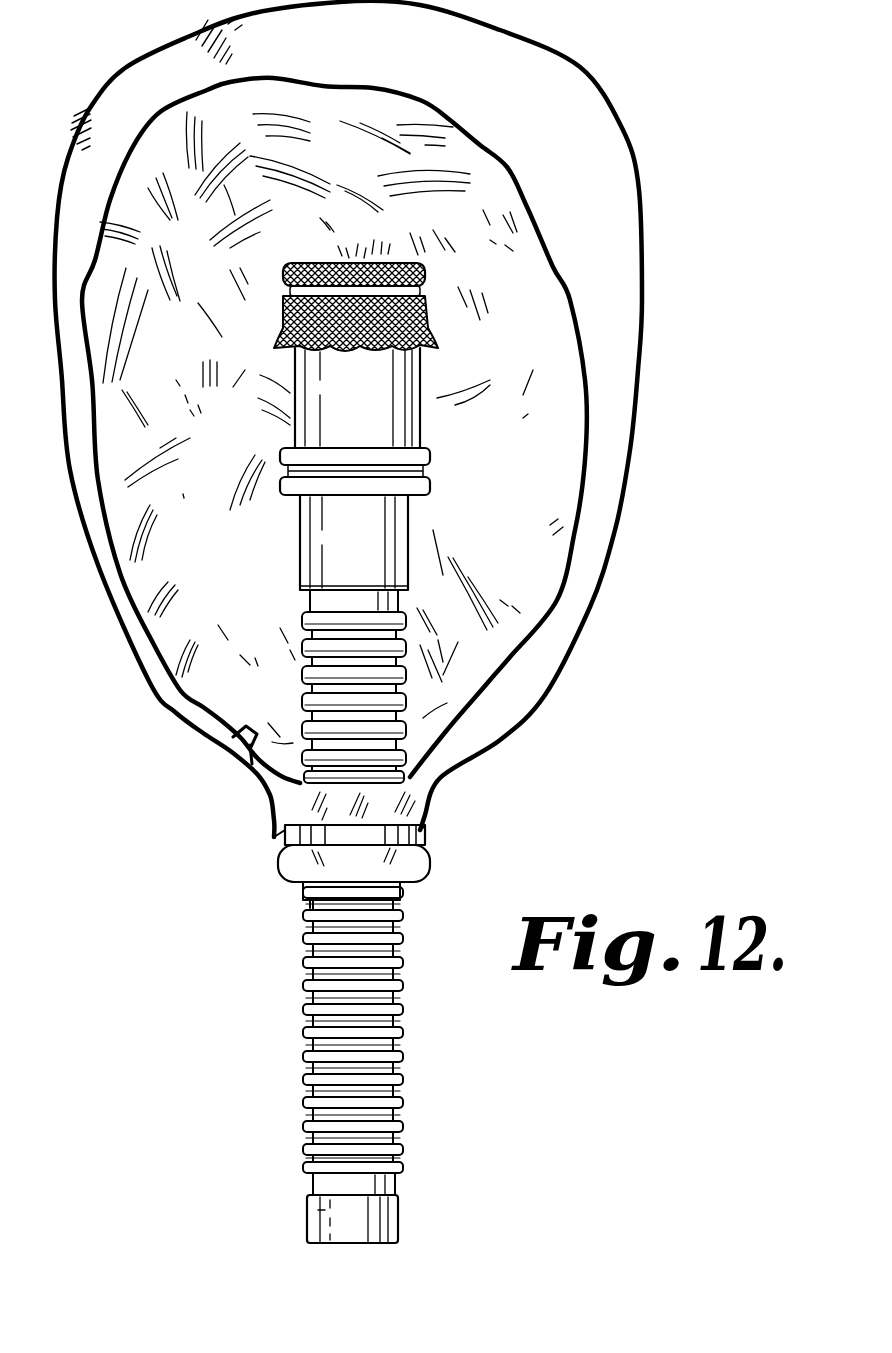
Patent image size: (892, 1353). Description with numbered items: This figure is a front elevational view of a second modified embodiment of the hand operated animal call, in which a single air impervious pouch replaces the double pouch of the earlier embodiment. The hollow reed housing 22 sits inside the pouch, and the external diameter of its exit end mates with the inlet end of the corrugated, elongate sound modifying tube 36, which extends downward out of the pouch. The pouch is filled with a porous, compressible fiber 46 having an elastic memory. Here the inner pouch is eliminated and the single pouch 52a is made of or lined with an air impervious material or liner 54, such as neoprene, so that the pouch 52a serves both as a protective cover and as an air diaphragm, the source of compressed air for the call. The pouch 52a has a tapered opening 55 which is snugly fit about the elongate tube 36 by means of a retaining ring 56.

The reed housing 22 is at (371, 409).
The elongate sound modifying tube 36 is at (530, 893).
The porous, compressible fiber 46 is at (183, 626).
The single pouch 52a is at (625, 373).
The air impervious liner 54 is at (242, 755).
The tapered opening 55 is at (420, 888).
The retaining ring 56 is at (282, 843).